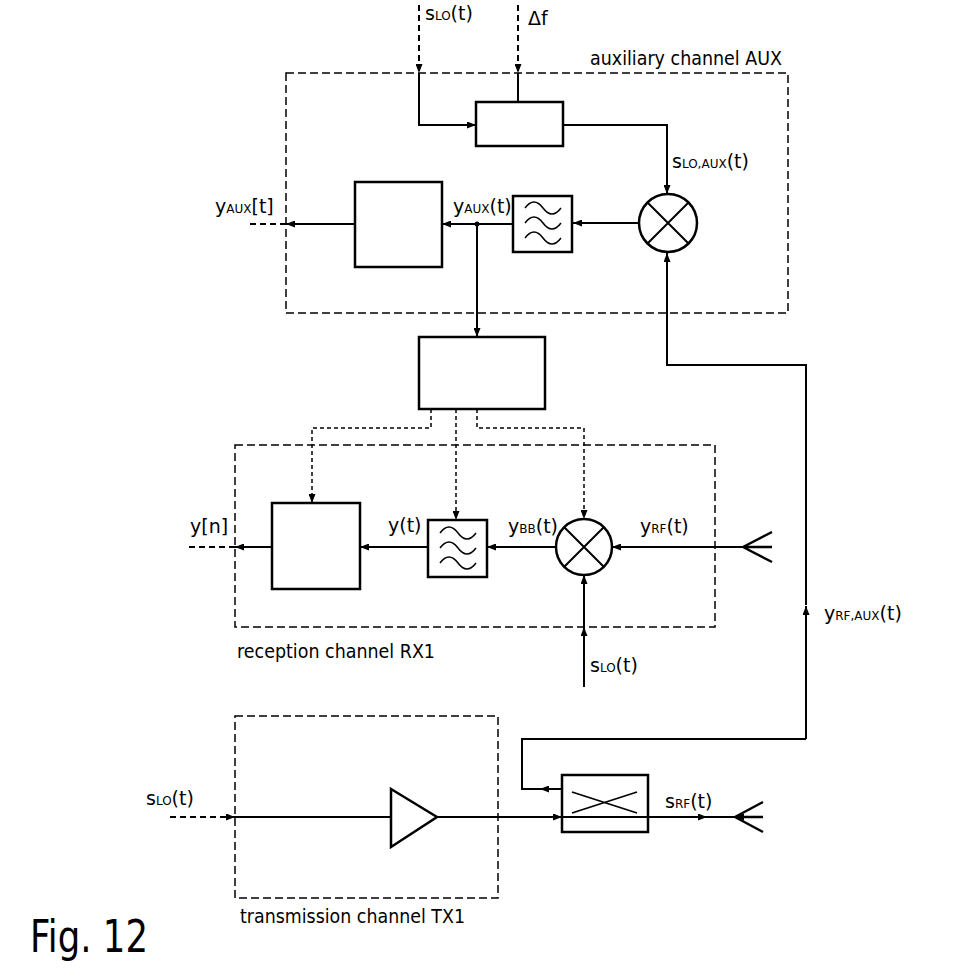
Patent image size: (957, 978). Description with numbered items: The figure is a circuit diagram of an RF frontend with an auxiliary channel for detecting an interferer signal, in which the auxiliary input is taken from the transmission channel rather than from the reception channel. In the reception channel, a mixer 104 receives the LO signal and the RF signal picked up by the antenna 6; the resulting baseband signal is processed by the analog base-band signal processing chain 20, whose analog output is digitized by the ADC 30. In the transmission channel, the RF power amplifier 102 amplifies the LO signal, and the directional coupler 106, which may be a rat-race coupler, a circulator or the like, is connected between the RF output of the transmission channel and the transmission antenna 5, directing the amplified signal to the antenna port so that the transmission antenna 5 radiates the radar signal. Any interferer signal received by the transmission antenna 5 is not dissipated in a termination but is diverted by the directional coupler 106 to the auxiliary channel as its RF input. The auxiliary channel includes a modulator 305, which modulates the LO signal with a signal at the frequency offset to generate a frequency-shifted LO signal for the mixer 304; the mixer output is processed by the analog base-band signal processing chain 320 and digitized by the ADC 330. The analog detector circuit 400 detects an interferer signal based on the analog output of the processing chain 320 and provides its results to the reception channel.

The modulator 305 is at (565, 141).
The mixer 304 is at (690, 243).
The analog base-band signal processing chain 320 is at (553, 252).
The ADC 330 is at (398, 224).
The analog detector circuit 400 is at (545, 370).
The mixer 104 is at (600, 514).
The analog base band signal processing chain 20 is at (462, 577).
The ADC 30 is at (316, 546).
The antenna 6 is at (752, 530).
The RF power amplifier 102 is at (413, 800).
The directional coupler 106 is at (608, 832).
The transmission antenna 5 is at (743, 801).